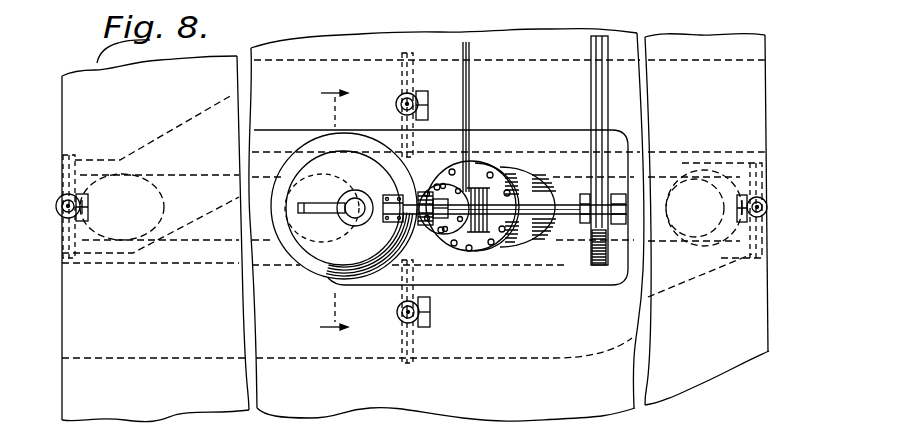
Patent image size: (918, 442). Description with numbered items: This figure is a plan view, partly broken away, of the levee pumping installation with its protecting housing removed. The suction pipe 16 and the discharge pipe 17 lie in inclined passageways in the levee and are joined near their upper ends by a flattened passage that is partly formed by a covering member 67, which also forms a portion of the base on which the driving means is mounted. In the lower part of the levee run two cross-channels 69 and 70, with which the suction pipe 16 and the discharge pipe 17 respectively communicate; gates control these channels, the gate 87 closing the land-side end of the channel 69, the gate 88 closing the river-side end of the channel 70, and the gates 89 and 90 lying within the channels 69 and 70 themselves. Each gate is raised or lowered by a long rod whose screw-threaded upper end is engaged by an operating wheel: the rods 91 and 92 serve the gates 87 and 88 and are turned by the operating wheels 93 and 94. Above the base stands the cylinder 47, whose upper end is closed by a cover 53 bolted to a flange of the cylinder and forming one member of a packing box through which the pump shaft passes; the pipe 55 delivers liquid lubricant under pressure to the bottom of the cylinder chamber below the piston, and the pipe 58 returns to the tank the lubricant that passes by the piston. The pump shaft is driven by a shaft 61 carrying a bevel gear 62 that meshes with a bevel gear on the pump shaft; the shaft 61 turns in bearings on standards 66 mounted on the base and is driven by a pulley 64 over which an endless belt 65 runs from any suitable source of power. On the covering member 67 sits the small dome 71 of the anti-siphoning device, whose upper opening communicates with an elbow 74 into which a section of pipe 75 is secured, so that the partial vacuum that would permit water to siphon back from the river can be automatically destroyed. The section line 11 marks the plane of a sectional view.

The section line 11- 11 is at (334, 210).
The suction pipe 16 is at (647, 192).
The discharge pipe 17 is at (141, 175).
The cylinder 47 is at (527, 187).
The cover 53 is at (482, 170).
The pipe 55 is at (471, 80).
The pipe 58 is at (464, 70).
The shaft 61 is at (542, 208).
The bevel gear 62 is at (433, 177).
The pulley 64 is at (590, 165).
The endless belt 65 is at (592, 83).
The standards 66 is at (413, 237).
The covering member 67 is at (322, 260).
The cross-channel 69 is at (143, 358).
The cross-channel 70 is at (708, 59).
The dome 71 is at (372, 220).
The elbow 74 is at (340, 217).
The section of pipe 75 is at (322, 208).
The gate 87 is at (750, 262).
The gate 88 is at (76, 156).
The gate 89 is at (400, 337).
The gate 90 is at (400, 80).
The rod 91 is at (760, 203).
The rod 92 is at (86, 194).
The operating wheel 93 is at (763, 214).
The operating wheel 94 is at (62, 209).